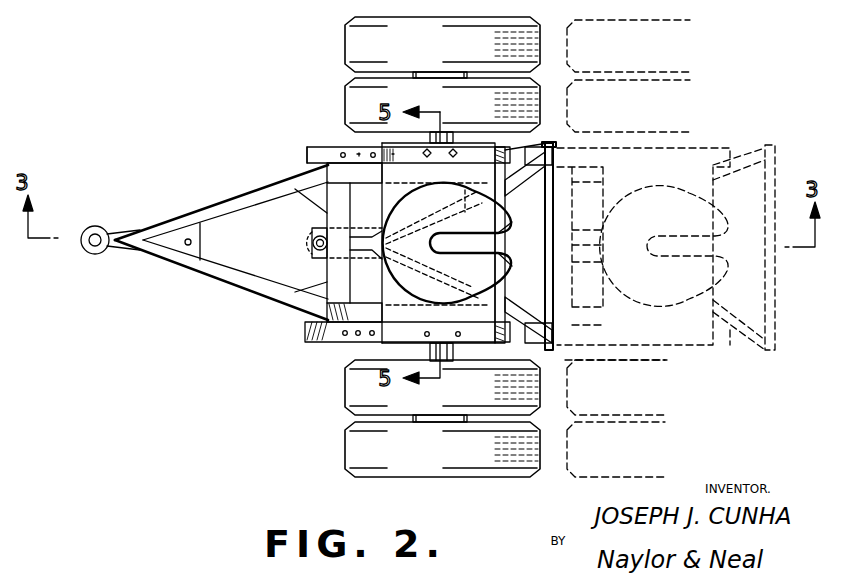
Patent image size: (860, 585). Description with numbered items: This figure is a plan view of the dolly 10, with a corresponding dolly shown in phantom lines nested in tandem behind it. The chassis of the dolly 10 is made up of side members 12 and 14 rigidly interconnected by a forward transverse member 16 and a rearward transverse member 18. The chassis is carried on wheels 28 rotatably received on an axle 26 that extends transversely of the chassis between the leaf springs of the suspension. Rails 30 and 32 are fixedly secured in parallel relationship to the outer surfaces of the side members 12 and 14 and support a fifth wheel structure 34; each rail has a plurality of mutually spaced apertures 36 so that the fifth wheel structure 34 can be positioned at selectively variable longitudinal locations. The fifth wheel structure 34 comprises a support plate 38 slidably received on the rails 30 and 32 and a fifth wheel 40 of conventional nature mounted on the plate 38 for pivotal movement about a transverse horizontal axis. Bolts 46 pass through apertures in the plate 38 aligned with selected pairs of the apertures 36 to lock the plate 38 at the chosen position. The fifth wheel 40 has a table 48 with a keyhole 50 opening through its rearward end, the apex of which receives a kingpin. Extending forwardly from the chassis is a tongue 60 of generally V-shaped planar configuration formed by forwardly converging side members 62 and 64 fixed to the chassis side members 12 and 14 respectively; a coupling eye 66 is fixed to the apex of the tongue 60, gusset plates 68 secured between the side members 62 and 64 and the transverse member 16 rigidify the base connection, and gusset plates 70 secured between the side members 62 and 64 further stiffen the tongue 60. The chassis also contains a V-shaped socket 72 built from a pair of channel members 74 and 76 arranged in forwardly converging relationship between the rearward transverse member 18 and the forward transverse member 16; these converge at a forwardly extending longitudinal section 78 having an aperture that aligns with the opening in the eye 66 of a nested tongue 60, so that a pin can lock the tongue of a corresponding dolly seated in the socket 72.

The dolly 10 is at (270, 124).
The side member 12 is at (338, 172).
The side member 14 is at (340, 312).
The transverse member 16 is at (327, 211).
The transverse member 18 is at (551, 335).
The axle 26 is at (455, 358).
The wheels 28 is at (347, 82).
The rail 30 is at (308, 150).
The rail 32 is at (308, 335).
The fifth wheel structure 34 is at (370, 293).
The apertures 36 is at (481, 344).
The support plate 38 is at (484, 160).
The fifth wheel 40 is at (420, 306).
The bolts 46 is at (451, 157).
The table 48 is at (507, 224).
The keyhole 50 is at (507, 264).
The tongue 60 is at (211, 196).
The side member 62 is at (259, 190).
The side member 64 is at (213, 283).
The coupling eye 66 is at (114, 226).
The gusset plates 68 is at (305, 196).
The gusset plates 70 is at (168, 236).
The V-shaped socket 72 is at (448, 190).
The channel member 74 is at (505, 189).
The channel member 76 is at (509, 302).
The longitudinal section 78 is at (312, 252).